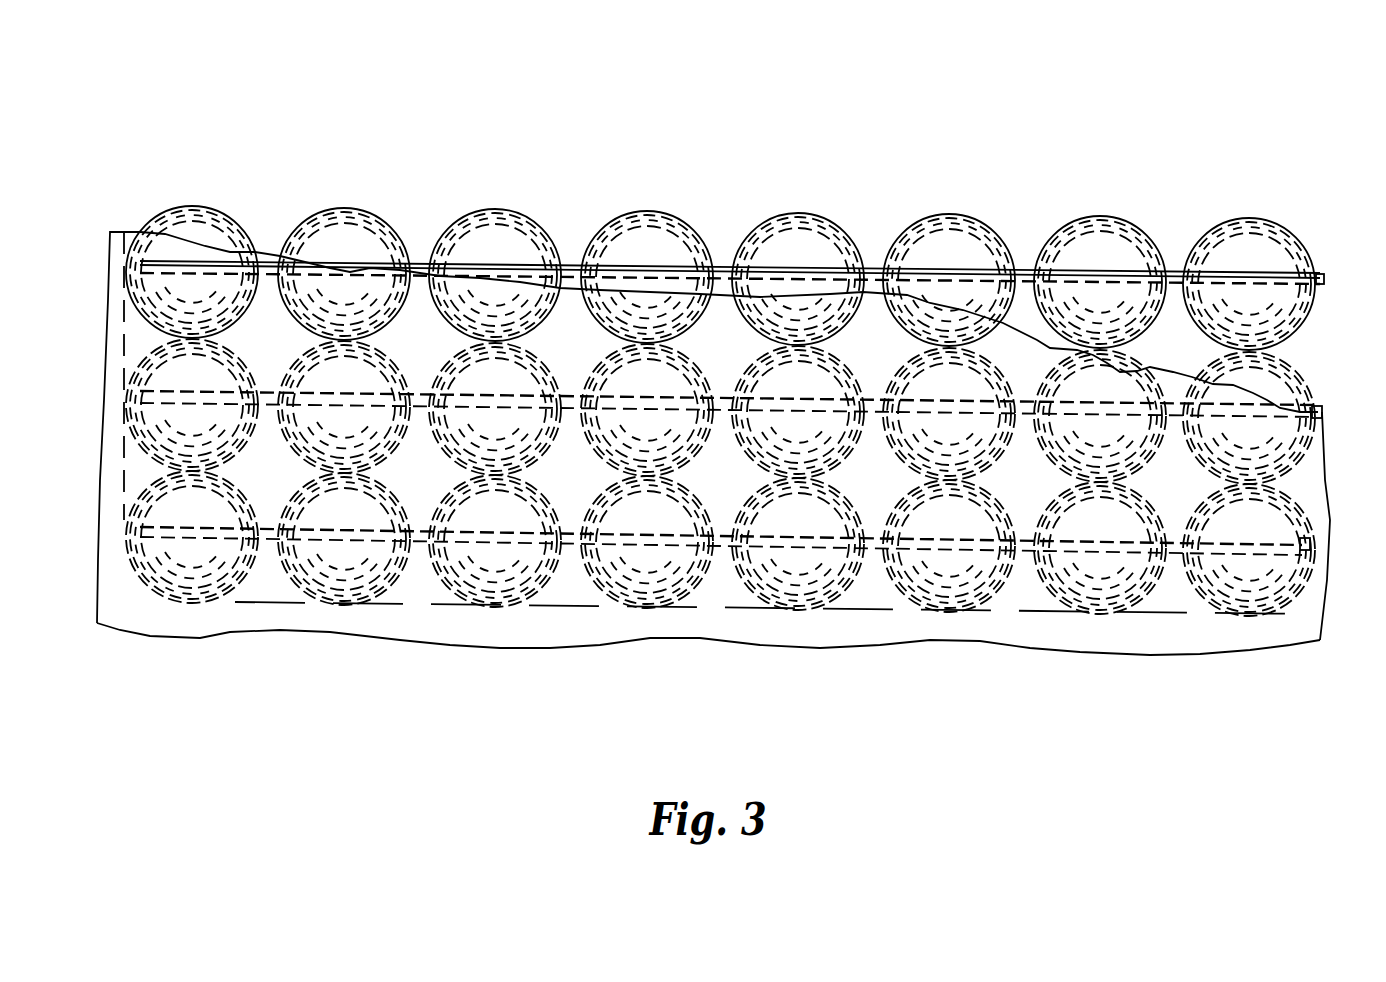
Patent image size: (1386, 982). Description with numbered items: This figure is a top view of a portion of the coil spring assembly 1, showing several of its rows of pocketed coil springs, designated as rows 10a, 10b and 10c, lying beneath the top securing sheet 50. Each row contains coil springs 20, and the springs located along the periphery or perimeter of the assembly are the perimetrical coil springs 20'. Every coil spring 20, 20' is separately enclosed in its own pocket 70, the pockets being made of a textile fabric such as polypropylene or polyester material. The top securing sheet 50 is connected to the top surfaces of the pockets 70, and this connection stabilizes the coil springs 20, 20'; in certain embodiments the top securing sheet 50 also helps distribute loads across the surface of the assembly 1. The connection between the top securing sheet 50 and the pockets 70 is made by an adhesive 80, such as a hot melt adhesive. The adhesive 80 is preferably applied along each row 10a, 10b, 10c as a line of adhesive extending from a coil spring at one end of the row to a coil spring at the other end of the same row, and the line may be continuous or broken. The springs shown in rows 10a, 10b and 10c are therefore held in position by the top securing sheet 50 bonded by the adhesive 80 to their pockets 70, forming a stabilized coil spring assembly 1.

The coil spring assembly 1 is at (535, 146).
The coil spring 20 is at (720, 381).
The perimetrical coil spring 20' is at (343, 417).
The pocket 70 is at (210, 207).
The top securing sheet 50 is at (230, 617).
The row of coil springs 10a is at (112, 524).
The row of coil springs 10b is at (1328, 401).
The row of coil springs 10c is at (104, 266).
The adhesive 80 is at (186, 540).